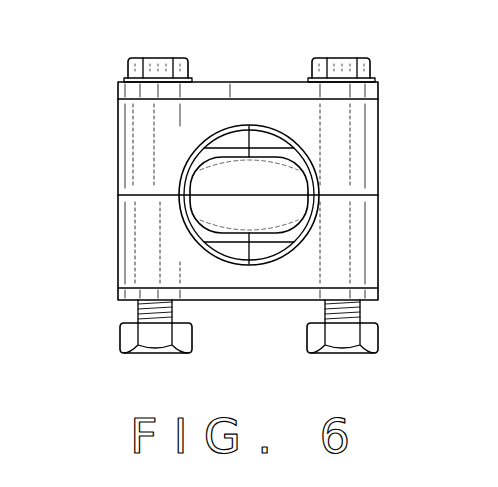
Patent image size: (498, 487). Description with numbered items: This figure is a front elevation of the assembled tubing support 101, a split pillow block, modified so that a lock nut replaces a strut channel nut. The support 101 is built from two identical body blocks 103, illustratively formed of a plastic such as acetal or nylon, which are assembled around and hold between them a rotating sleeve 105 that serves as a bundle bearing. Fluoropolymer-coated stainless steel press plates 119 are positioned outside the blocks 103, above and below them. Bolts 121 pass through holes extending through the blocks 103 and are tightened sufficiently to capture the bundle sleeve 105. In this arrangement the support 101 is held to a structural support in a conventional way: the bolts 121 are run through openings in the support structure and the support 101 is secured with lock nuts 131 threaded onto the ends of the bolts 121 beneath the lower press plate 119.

The support 101 is at (90, 210).
The body block 103 is at (362, 148).
The rotating sleeve 105 is at (249, 150).
The press plate 119 is at (373, 90).
The bolt 121 is at (336, 57).
The lock nut 131 is at (368, 336).